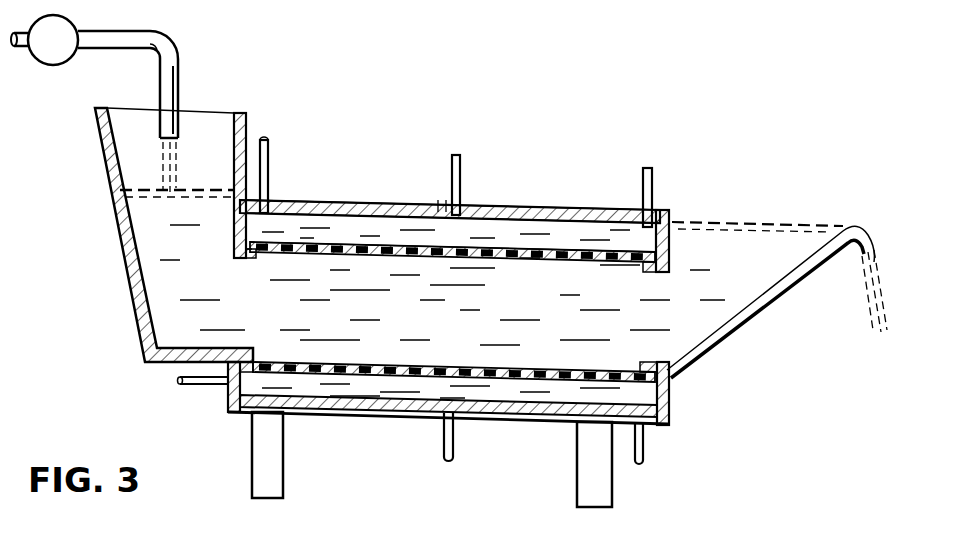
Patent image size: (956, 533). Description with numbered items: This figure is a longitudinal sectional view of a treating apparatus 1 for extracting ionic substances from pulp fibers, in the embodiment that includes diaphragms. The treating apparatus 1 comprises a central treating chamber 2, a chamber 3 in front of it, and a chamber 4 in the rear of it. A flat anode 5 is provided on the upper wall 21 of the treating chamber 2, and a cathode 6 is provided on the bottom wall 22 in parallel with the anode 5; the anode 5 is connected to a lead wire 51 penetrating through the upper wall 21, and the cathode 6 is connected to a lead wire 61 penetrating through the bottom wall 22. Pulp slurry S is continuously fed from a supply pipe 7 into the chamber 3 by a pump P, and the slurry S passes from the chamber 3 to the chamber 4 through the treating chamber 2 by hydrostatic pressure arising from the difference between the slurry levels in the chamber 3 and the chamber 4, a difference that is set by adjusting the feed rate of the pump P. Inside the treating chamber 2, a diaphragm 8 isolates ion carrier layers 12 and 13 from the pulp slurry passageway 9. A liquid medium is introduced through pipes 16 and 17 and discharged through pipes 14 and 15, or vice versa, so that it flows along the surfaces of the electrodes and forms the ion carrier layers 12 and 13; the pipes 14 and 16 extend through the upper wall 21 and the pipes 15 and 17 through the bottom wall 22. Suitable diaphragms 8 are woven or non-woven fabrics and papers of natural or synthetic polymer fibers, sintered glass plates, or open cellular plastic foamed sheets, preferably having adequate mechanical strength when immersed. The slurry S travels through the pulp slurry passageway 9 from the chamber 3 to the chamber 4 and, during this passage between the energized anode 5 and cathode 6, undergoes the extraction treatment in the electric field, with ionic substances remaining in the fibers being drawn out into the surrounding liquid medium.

The treating apparatus 1 is at (352, 200).
The treating chamber 2 is at (514, 290).
The chamber 3 is at (157, 282).
The chamber 4 is at (722, 245).
The anode 5 is at (397, 212).
The cathode 6 is at (531, 408).
The supply pipe 7 is at (180, 46).
The diaphragm 8 is at (600, 250).
The pulp slurry passageway 9 is at (553, 305).
The ion carrier layer 12 is at (320, 232).
The ion carrier layer 13 is at (416, 388).
The pipe 14 is at (654, 186).
The pipe 15 is at (645, 438).
The pipe 16 is at (268, 142).
The pipe 17 is at (208, 388).
The upper wall 21 is at (432, 205).
The bottom wall 22 is at (372, 412).
The lead wire 51 is at (462, 176).
The lead wire 61 is at (455, 432).
The pulp slurry S is at (775, 245).
The pump P is at (44, 40).